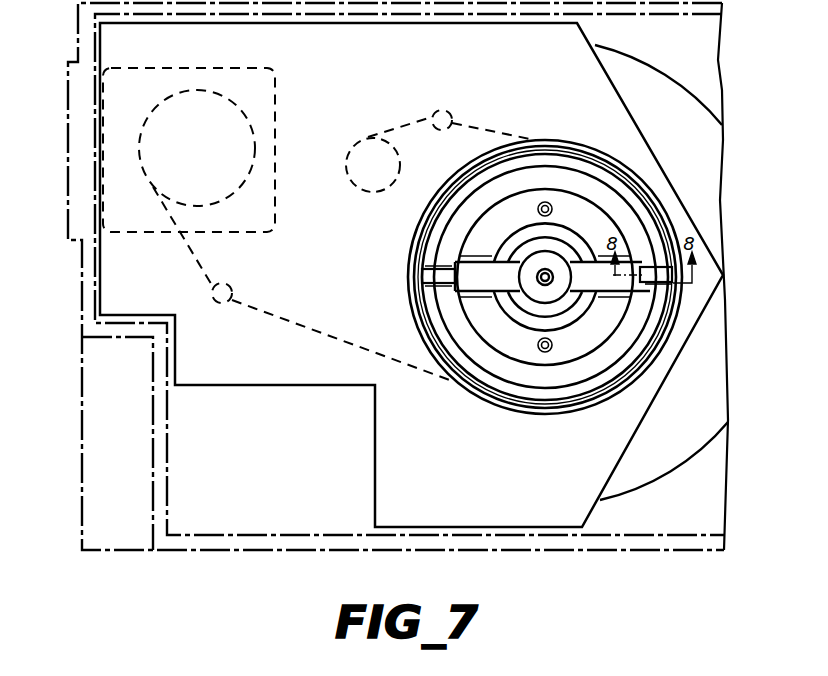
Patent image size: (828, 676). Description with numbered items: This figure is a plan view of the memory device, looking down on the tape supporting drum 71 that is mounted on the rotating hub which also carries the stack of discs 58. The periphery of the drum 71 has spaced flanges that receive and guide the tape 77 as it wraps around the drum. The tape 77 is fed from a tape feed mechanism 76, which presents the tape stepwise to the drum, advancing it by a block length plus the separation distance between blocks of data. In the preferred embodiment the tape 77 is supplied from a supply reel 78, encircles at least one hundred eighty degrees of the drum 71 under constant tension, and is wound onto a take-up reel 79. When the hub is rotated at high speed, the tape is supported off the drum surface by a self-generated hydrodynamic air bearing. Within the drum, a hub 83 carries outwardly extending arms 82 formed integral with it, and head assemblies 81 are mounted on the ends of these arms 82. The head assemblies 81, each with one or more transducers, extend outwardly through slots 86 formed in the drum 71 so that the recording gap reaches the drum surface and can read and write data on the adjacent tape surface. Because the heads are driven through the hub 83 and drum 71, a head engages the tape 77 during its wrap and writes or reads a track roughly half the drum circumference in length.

The disc 58 is at (670, 457).
The tape supporting drum 71 is at (548, 390).
The tape feed mechanism 76 is at (375, 420).
The tape 77 is at (498, 125).
The supply reel 78 is at (222, 92).
The take-up reel 79 is at (356, 144).
The head assembly 81 is at (430, 300).
The arm 82 is at (482, 268).
The hub 83 is at (562, 245).
The slot 86 is at (420, 265).